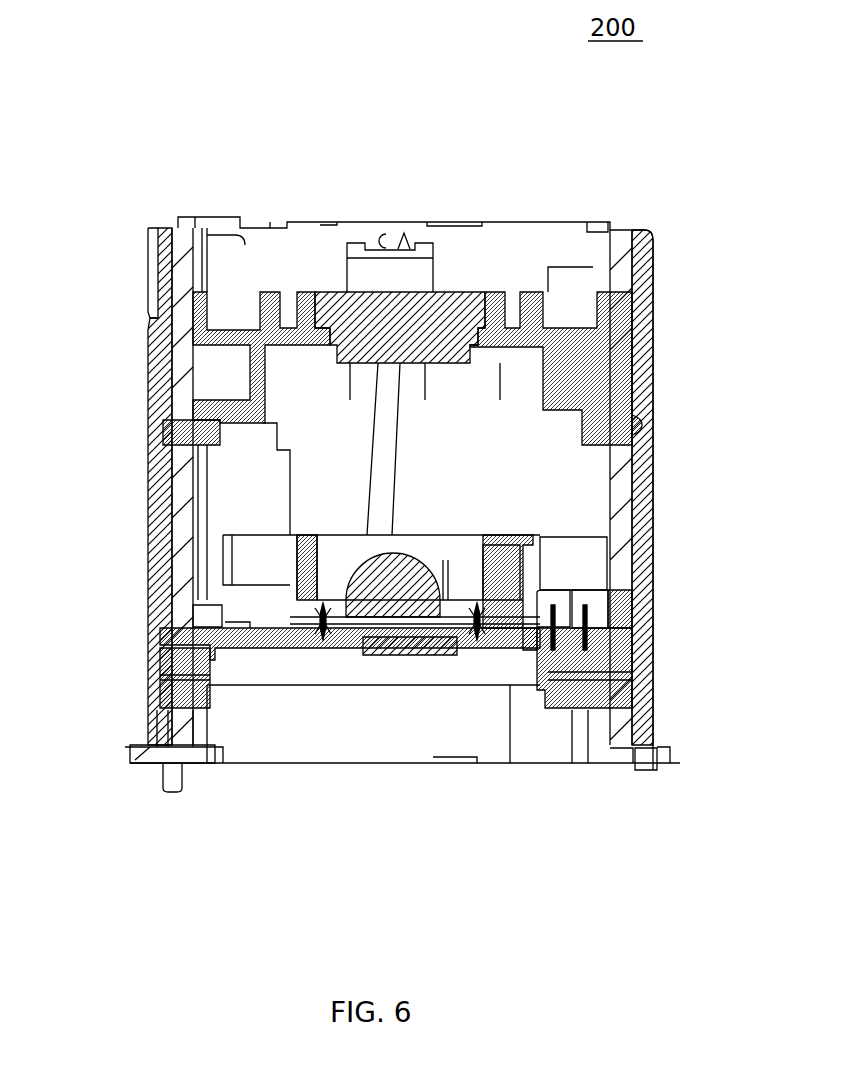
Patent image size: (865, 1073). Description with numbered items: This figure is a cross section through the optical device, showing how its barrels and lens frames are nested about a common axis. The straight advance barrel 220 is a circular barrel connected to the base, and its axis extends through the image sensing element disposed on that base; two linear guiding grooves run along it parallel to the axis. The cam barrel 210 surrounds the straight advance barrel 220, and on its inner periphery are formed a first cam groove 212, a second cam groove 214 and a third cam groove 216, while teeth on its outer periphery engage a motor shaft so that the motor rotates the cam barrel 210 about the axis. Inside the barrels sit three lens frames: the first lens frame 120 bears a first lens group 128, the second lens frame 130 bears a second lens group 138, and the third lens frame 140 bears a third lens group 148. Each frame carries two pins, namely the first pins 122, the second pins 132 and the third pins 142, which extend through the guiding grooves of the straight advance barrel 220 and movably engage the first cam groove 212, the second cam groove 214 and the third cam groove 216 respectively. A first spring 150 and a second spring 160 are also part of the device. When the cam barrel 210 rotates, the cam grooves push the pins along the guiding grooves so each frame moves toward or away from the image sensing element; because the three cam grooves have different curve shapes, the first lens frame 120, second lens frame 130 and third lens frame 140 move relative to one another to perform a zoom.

The third lens group 148 is at (375, 310).
The straight advance barrel 220 is at (158, 243).
The cam barrel 210 is at (148, 347).
The third pins 142 is at (162, 432).
The third cam groove 216 is at (165, 440).
The first spring 150 is at (320, 615).
The second pins 132 is at (172, 630).
The second cam groove 214 is at (160, 650).
The first pins 122 is at (160, 705).
The first cam groove 212 is at (150, 696).
The third lens frame 140 is at (587, 357).
The second spring 160 is at (390, 455).
The second lens group 138 is at (433, 563).
The second lens frame 130 is at (527, 568).
The first lens group 128 is at (430, 645).
The first lens frame 120 is at (600, 690).